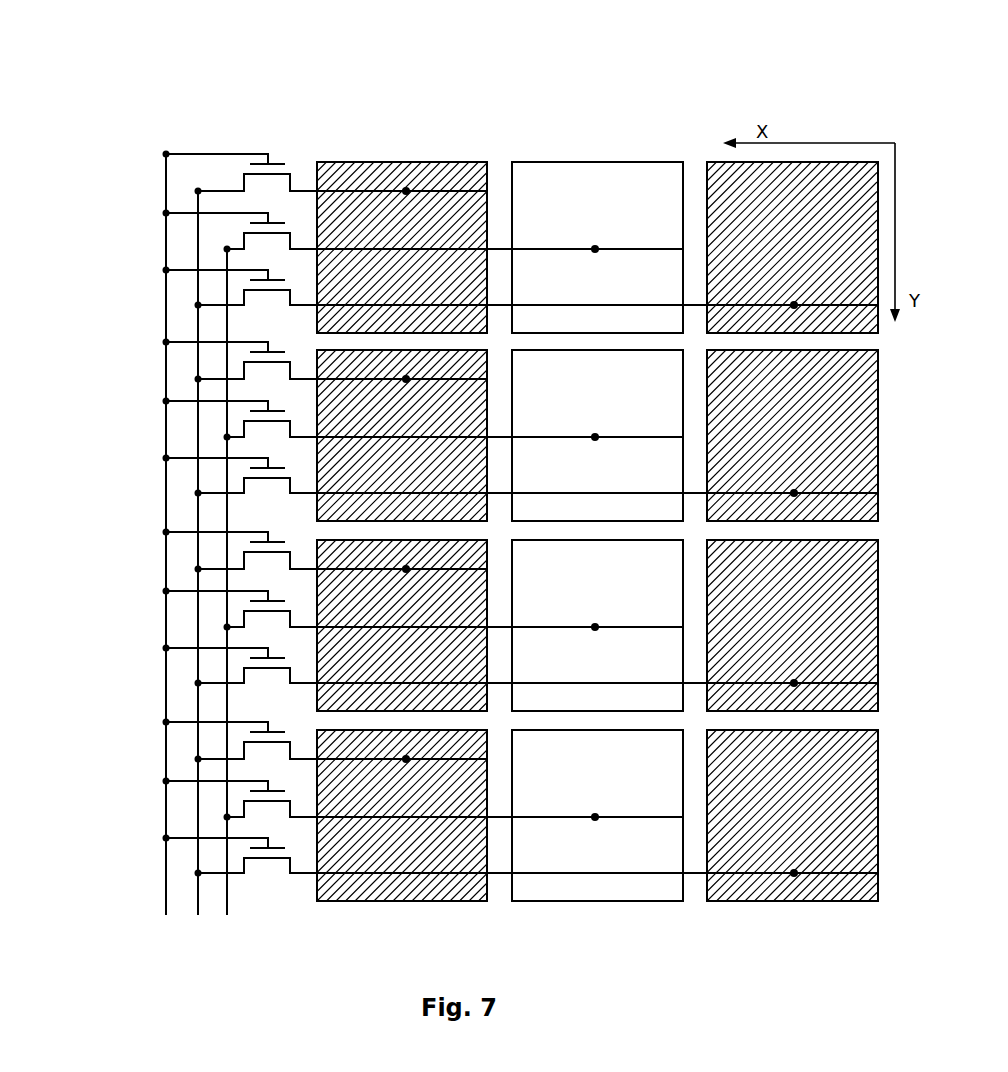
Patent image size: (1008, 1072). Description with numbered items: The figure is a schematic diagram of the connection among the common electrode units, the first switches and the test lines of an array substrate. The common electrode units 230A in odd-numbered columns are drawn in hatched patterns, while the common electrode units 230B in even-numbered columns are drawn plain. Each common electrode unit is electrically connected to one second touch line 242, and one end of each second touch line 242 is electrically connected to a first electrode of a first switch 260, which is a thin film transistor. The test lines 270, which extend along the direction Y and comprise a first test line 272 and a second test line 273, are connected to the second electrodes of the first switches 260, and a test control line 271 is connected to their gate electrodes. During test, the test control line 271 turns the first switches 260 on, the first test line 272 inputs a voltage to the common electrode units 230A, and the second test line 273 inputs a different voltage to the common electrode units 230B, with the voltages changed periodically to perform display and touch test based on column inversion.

The common electrode units in odd numbers of columns 230A is at (337, 170).
The common electrode units in even numbers of columns 230B is at (553, 172).
The second touch line 242 is at (473, 173).
The first switch 260 is at (279, 160).
The test lines 270 is at (119, 530).
The test control line 271 is at (166, 167).
The first test line 272 is at (198, 232).
The second test line 273 is at (227, 297).